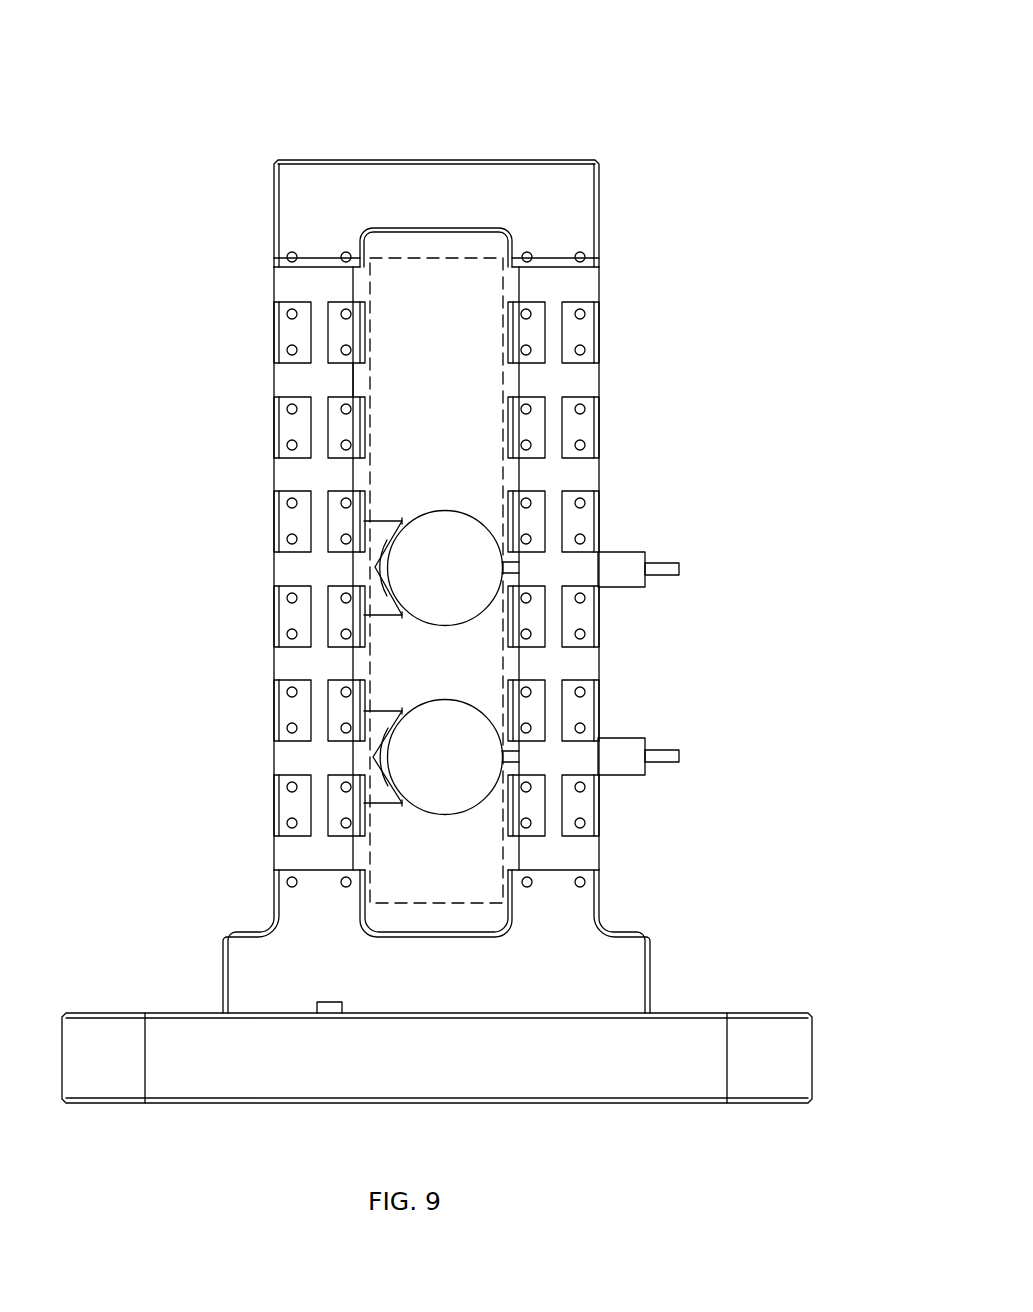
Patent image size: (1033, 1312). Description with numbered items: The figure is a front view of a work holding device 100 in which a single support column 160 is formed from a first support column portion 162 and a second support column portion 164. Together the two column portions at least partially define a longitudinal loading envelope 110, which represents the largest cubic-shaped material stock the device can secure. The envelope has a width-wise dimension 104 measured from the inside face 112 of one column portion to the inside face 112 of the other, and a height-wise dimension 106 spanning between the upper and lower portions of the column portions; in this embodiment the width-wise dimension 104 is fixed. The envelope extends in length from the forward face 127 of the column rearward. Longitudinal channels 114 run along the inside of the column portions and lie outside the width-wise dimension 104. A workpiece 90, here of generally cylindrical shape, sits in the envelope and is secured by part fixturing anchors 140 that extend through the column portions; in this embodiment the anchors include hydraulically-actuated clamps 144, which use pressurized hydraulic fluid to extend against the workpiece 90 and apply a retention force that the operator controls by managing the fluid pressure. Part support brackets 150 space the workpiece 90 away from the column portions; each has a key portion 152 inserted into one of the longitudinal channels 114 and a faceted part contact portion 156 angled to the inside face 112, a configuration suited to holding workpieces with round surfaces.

The work holding device 100 is at (710, 97).
The width-wise dimension 104 is at (503, 228).
The height-wise dimension 106 is at (274, 258).
The longitudinal loading envelope 110 is at (503, 258).
The inside face 112 is at (367, 332).
The longitudinal channel 114 is at (355, 382).
The forward face 127 is at (290, 213).
The part fixturing anchor 140 is at (660, 546).
The hydraulically-actuated clamp 144 is at (630, 588).
The part support bracket 150 is at (386, 526).
The key portion 152 is at (352, 570).
The faceted part contact portion 156 is at (382, 587).
The support column 160 is at (615, 193).
The first support column portion 162 is at (274, 333).
The second support column portion 164 is at (599, 333).
The workpiece 90 is at (444, 511).